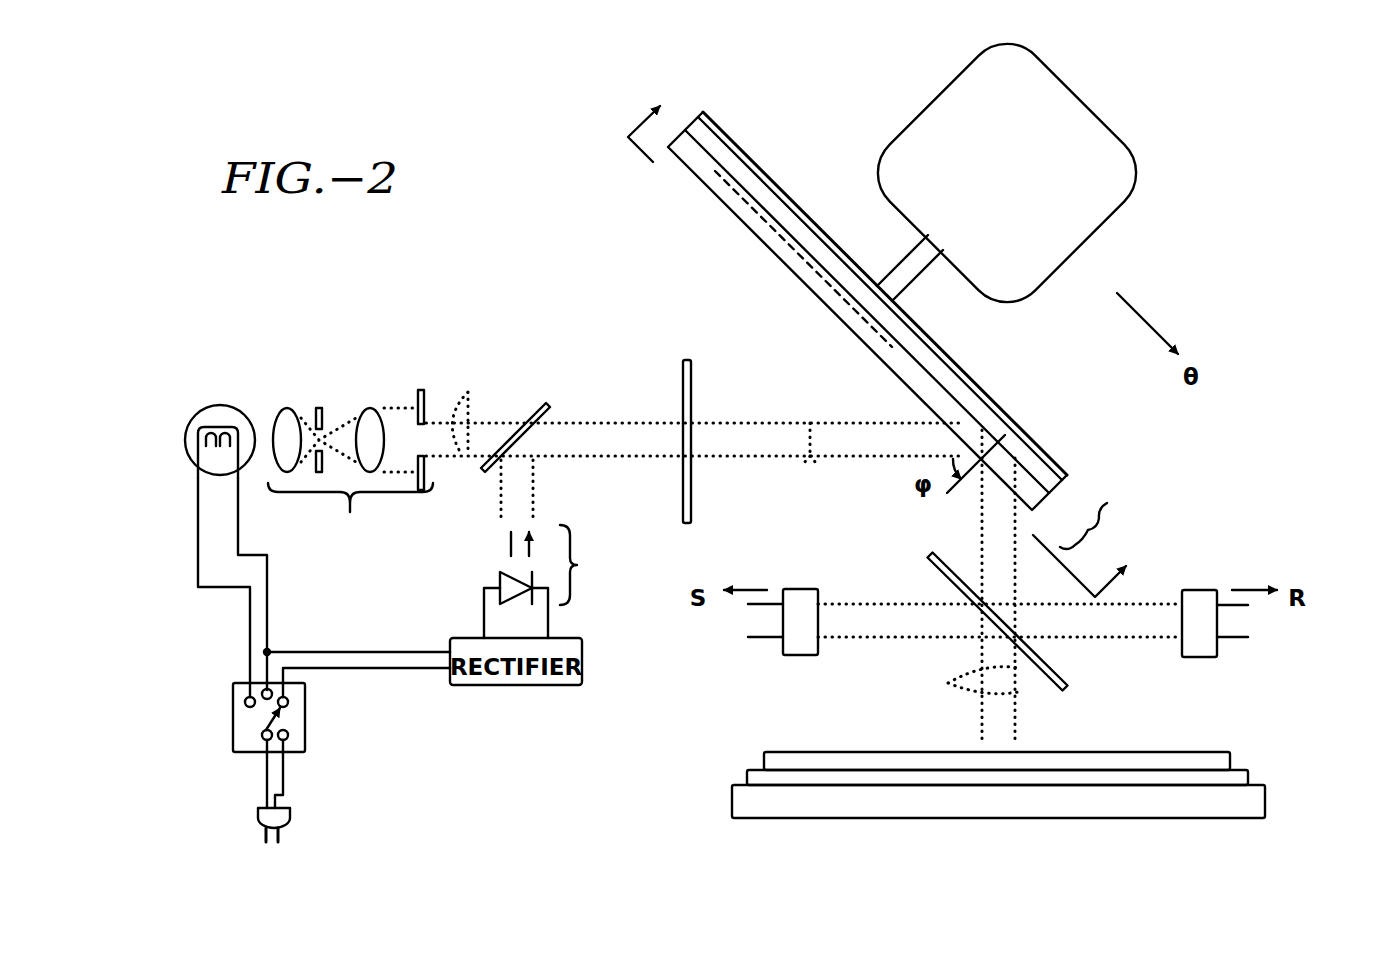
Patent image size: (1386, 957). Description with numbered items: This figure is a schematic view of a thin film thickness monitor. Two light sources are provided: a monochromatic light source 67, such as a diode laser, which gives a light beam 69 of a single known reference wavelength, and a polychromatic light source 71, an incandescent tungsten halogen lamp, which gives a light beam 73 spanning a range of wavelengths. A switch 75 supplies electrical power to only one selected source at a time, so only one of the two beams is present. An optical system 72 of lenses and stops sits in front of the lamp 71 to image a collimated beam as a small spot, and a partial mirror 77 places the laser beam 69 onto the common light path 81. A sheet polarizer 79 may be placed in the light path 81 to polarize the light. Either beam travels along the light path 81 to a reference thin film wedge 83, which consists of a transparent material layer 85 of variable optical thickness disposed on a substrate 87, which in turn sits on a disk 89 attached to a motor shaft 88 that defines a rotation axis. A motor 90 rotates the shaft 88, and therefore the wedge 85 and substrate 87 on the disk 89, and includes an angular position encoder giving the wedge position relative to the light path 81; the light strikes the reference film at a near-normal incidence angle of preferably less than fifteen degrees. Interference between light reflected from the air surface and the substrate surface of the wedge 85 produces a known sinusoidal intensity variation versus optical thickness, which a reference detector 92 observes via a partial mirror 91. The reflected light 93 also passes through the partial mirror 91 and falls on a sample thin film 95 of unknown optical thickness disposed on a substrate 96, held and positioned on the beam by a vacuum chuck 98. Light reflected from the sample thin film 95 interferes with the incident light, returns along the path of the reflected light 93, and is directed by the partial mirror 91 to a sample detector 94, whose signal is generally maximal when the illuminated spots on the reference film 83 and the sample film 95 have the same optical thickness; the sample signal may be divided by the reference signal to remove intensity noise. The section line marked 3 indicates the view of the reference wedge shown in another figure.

The section line for FIG. 3 is at (888, 337).
The monochromatic light source 67 is at (551, 581).
The light beam 69 is at (506, 563).
The polychromatic light source 71 is at (218, 412).
The optical system 72 is at (350, 470).
The light beam 73 is at (470, 410).
The switch 75 is at (305, 720).
The partial mirror 77 is at (548, 405).
The sheet polarizer 79 is at (691, 400).
The light path 81 is at (822, 460).
The reference thin film wedge 83 is at (1091, 533).
The transparent material layer 85 is at (1034, 497).
The substrate 87 is at (1050, 483).
The motor shaft 88 is at (903, 278).
The disk 89 is at (1052, 462).
The motor 90 is at (1064, 252).
The partial mirror 91 is at (1058, 690).
The reference detector 92 is at (1195, 590).
The reflected light 93 is at (964, 680).
The sample detector 94 is at (797, 589).
The sample thin film 95 is at (790, 752).
The substrate 96 is at (747, 776).
The vacuum chuck 98 is at (732, 802).